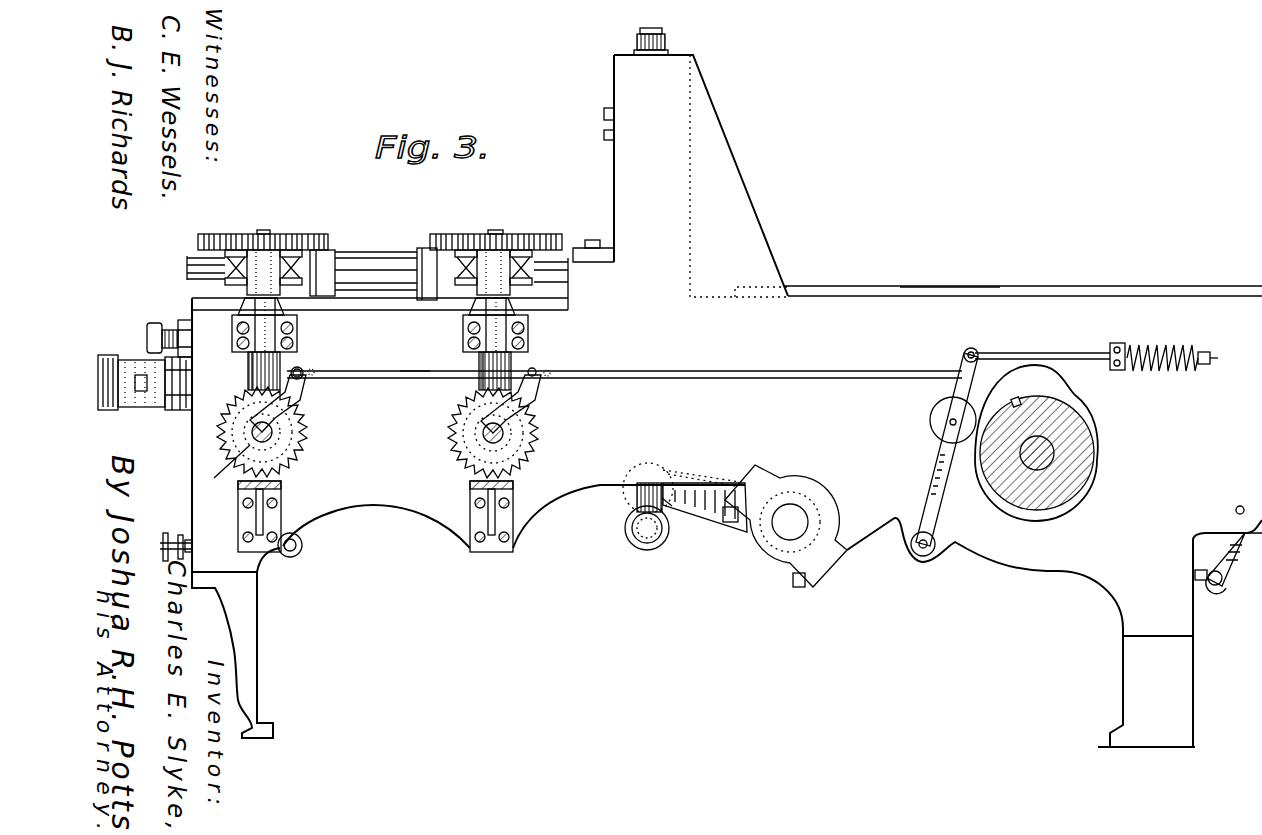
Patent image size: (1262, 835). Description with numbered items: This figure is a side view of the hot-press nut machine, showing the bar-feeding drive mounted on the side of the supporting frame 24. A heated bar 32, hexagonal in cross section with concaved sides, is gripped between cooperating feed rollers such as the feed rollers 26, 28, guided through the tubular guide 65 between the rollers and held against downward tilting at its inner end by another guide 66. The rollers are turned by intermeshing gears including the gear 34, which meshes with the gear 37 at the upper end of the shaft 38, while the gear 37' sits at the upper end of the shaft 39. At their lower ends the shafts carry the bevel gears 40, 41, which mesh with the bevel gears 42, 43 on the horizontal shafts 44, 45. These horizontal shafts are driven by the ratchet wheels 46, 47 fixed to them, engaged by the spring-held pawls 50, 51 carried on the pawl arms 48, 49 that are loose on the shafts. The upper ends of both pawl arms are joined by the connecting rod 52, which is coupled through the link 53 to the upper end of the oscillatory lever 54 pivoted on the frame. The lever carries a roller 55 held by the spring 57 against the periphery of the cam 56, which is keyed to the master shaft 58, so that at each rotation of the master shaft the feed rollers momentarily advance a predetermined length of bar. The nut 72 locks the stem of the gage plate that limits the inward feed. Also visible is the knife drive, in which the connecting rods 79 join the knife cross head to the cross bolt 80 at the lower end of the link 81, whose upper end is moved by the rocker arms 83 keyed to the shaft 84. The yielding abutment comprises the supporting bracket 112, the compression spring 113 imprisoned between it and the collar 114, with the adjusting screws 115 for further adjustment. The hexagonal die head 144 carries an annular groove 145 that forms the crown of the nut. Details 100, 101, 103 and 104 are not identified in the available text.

The supporting frame 24 is at (958, 300).
The feed roller 26 is at (232, 270).
The feed roller 28 is at (560, 285).
The bar 32 is at (185, 268).
The gear 34 is at (192, 256).
The gear 37 is at (263, 230).
The gear 37' is at (496, 231).
The shaft 38 is at (298, 330).
The shaft 39 is at (528, 345).
The bevel gear 40 is at (305, 428).
The bevel gear 41 is at (456, 410).
The bevel gear 42 is at (302, 445).
The bevel gear 43 is at (520, 452).
The horizontal shaft 44 is at (236, 470).
The horizontal shaft 45 is at (525, 432).
The ratchet wheel 46 is at (300, 415).
The ratchet wheel 47 is at (538, 403).
The pawl arm 48 is at (305, 386).
The pawl arm 49 is at (551, 375).
The pawl 50 is at (301, 368).
The pawl 51 is at (482, 378).
The connecting rod 52 is at (414, 370).
The link 53 is at (748, 370).
The oscillatory lever 54 is at (935, 455).
The roller 55 is at (930, 415).
The cam 56 is at (1060, 397).
The spring 57 is at (1152, 344).
The master shaft 58 is at (1055, 450).
The tubular guide 65 is at (405, 256).
The guide 66 is at (596, 238).
The nut 72 is at (666, 33).
The connecting rod 79 is at (636, 500).
The cross bolt 80 is at (652, 540).
The link 81 is at (664, 514).
The rocker arm 83 is at (712, 525).
The shaft 84 is at (785, 540).
The knob 100 is at (147, 334).
The collar 101 is at (180, 326).
The roller 103 is at (302, 542).
The bracket 104 is at (175, 536).
The supporting bracket 112 is at (114, 410).
The compression spring 113 is at (247, 368).
The collar 114 is at (180, 420).
The adjusting screw 115 is at (170, 410).
The die head 144 is at (1238, 560).
The annular groove 145 is at (1222, 586).